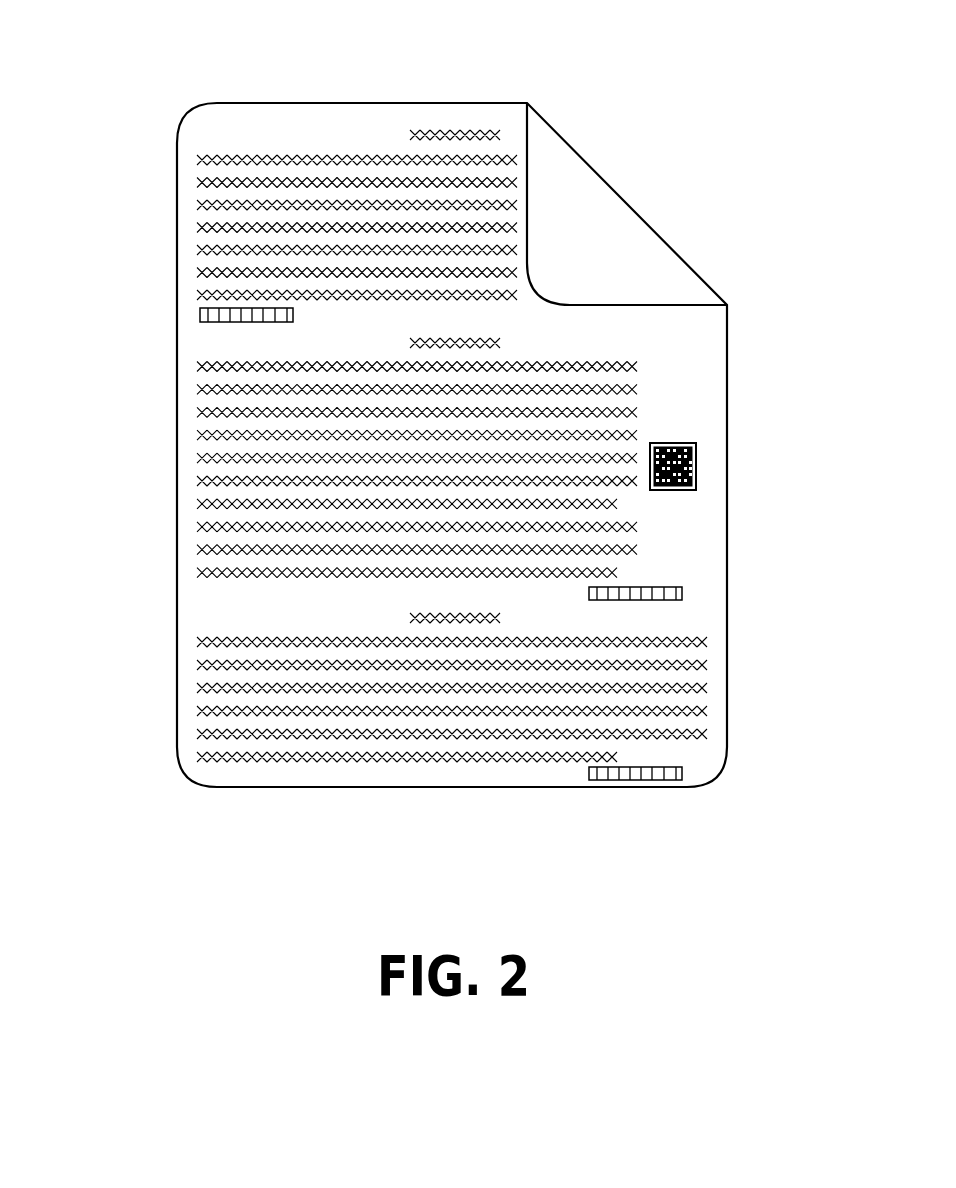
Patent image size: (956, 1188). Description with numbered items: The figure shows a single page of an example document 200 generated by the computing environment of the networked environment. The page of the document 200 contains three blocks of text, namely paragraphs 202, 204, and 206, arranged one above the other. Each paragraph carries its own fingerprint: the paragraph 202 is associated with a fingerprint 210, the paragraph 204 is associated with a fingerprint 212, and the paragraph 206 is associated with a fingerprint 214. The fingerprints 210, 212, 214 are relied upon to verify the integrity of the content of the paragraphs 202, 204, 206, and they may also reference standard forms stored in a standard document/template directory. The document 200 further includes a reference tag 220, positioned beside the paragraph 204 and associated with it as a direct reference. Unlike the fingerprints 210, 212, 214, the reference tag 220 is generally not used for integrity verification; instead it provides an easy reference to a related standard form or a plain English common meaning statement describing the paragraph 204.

The document 200 is at (222, 61).
The paragraph 202 is at (160, 308).
The paragraph 204 is at (743, 582).
The paragraph 206 is at (743, 763).
The fingerprint 210 is at (263, 323).
The fingerprint 212 is at (653, 601).
The fingerprint 214 is at (653, 781).
The reference tag 220 is at (683, 491).